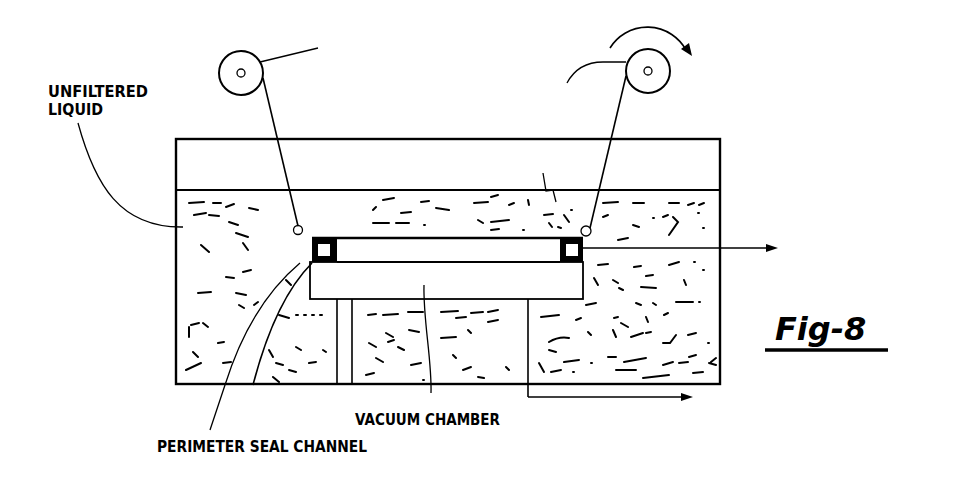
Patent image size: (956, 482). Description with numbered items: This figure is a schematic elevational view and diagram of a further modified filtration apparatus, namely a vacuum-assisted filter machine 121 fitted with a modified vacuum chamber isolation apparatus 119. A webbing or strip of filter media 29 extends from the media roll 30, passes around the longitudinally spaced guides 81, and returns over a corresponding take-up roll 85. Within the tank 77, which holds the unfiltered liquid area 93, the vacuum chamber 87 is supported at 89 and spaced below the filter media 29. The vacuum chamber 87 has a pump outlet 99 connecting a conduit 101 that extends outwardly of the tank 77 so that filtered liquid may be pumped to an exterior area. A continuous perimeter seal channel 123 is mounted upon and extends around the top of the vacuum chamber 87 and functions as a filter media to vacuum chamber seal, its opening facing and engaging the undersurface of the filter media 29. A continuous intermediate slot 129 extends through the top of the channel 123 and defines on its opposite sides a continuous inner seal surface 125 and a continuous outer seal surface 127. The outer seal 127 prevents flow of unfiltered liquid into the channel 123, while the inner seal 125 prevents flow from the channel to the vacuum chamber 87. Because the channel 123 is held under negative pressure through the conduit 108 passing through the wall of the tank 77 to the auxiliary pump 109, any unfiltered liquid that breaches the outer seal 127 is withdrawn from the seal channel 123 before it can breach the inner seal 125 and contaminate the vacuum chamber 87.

The filter media 29 is at (278, 127).
The media roll 30 is at (239, 52).
The tank 77 is at (176, 333).
The guides 81 is at (304, 258).
The take-up roll 85 is at (660, 75).
The vacuum chamber 87 is at (271, 341).
The support 89 is at (335, 327).
The unfiltered liquid area 93 is at (193, 190).
The pump outlet 99 is at (522, 298).
The conduit 101 is at (623, 397).
The conduit 108 is at (735, 247).
The auxiliary pump 109 is at (847, 261).
The vacuum chamber isolation apparatus 119 is at (280, 254).
The vacuum-assisted filter machine 121 is at (733, 173).
The perimeter seal channel 123 is at (562, 253).
The inner seal surface 125 is at (328, 238).
The outer seal surface 127 is at (314, 192).
The intermediate slot 129 is at (364, 173).